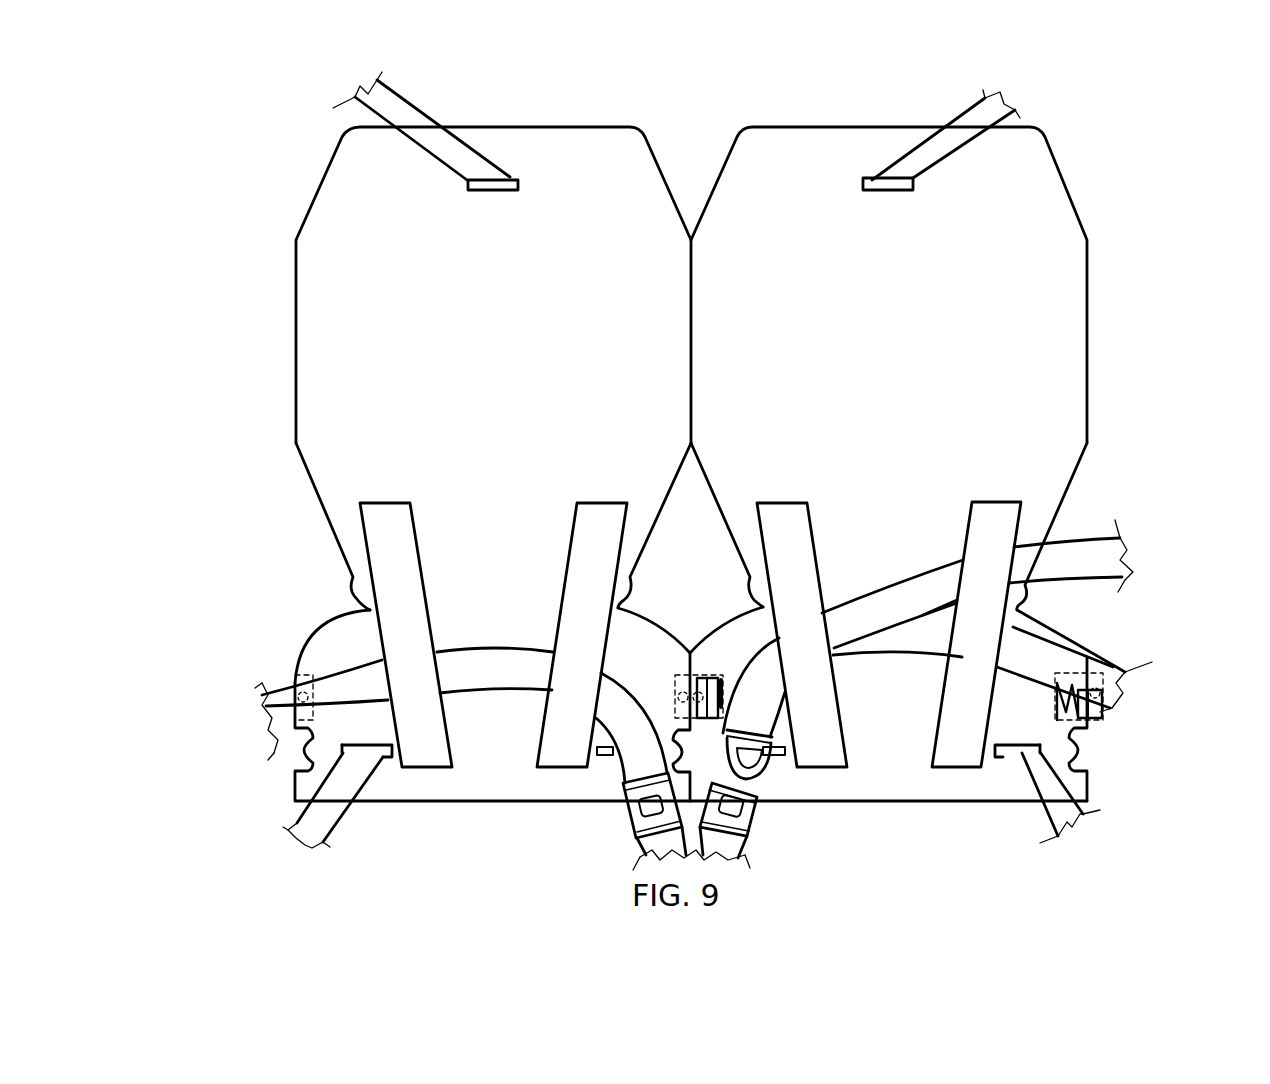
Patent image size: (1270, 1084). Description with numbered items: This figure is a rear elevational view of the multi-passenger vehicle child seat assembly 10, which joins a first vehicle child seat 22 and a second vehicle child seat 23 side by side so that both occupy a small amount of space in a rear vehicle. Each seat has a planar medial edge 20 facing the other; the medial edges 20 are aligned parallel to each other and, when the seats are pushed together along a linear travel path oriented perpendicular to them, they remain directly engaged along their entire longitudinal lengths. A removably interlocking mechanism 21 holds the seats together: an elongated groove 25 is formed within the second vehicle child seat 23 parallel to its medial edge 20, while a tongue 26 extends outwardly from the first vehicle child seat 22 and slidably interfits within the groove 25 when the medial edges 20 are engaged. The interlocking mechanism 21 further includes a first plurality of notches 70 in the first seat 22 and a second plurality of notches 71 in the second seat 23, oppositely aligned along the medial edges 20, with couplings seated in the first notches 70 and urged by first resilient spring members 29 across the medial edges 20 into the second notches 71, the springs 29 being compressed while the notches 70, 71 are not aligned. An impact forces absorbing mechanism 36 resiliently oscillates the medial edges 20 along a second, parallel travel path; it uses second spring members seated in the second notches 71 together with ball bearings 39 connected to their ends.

The multi-passenger vehicle child seat assembly 10 is at (1160, 186).
The planar medial edges 20 is at (689, 673).
The removably interlocking mechanism 21 is at (1113, 647).
The first vehicle child seat 22 is at (888, 808).
The second vehicle child seat 23 is at (453, 808).
The elongated groove 25 is at (303, 752).
The tongue 26 is at (1103, 758).
The first resilient spring members 29 is at (1107, 712).
The impact forces absorbing mechanism 36 is at (273, 650).
The ball bearings 39 is at (290, 690).
The first plurality of notches 70 is at (1067, 720).
The second plurality of notches 71 is at (295, 676).